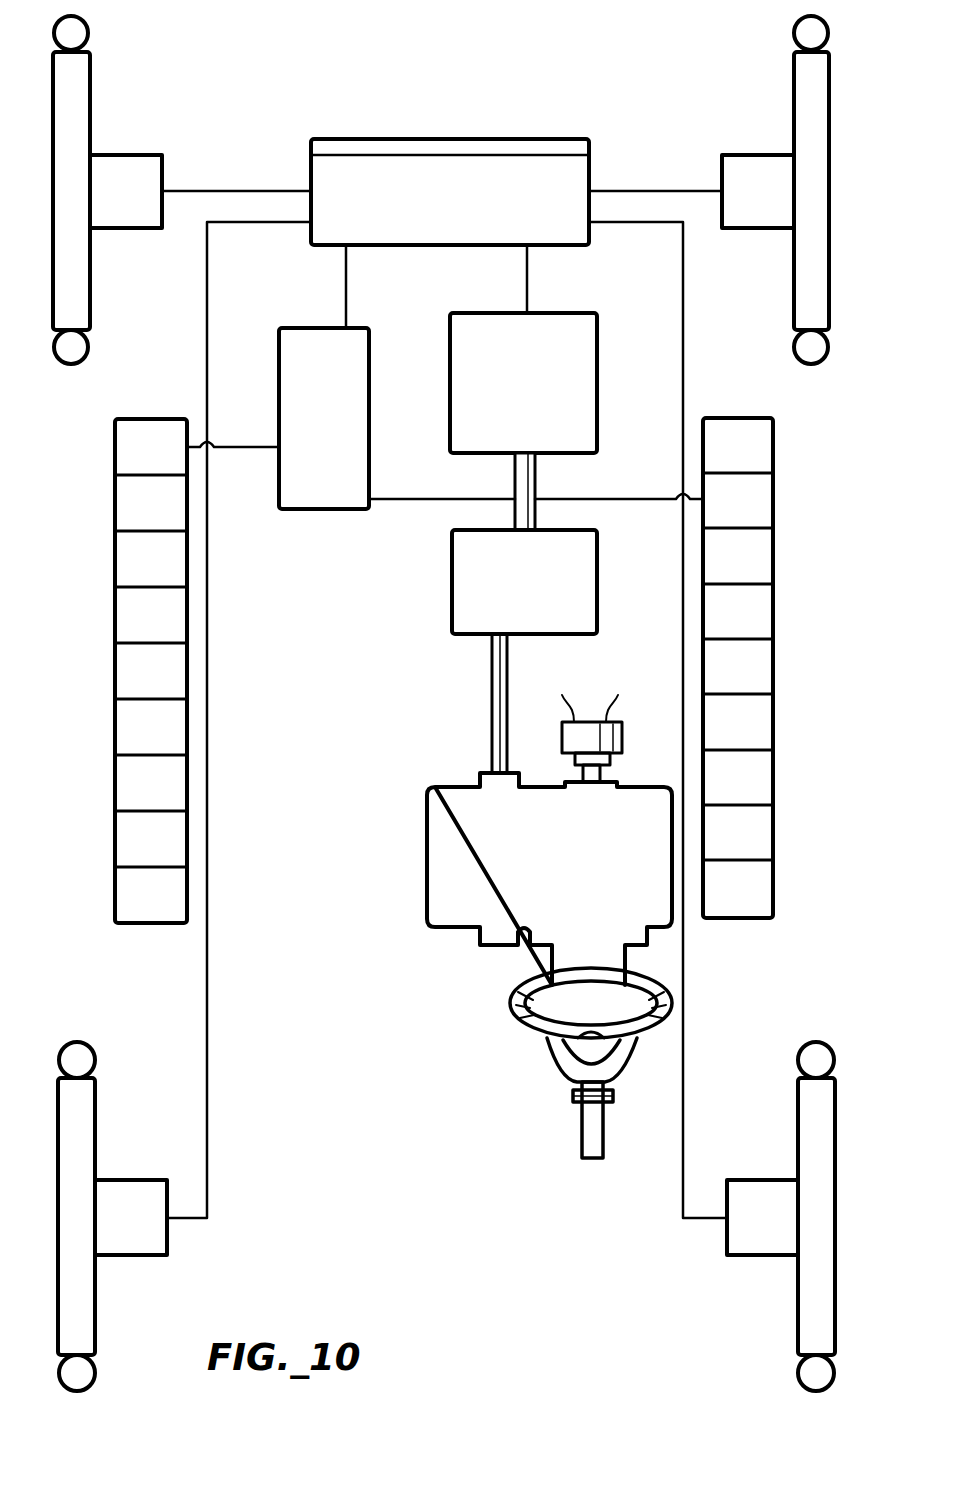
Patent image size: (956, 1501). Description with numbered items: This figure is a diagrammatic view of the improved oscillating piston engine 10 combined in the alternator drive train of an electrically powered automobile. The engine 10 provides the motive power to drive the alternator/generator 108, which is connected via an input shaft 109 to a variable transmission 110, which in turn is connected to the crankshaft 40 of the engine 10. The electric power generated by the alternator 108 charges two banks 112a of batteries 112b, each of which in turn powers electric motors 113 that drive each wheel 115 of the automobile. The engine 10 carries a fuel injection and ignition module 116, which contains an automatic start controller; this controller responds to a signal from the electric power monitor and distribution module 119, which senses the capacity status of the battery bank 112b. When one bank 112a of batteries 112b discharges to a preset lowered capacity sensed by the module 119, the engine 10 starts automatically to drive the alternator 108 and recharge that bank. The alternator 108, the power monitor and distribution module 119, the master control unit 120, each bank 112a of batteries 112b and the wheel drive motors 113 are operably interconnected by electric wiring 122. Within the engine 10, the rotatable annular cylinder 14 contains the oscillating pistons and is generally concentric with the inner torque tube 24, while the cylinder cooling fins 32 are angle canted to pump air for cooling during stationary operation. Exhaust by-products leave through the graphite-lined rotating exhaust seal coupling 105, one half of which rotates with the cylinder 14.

The oscillating piston engine 10 is at (427, 846).
The annular cylinder 14 is at (512, 1000).
The inner torque tube 24 is at (580, 776).
The cooling fins 32 is at (540, 1035).
The crankshaft 40 is at (492, 715).
The rotating exhaust seal coupling 105 is at (582, 1096).
The alternator/generator 108 is at (550, 325).
The input shaft 109 is at (532, 487).
The variable transmission 110 is at (452, 616).
The battery bank 112a is at (112, 713).
The batteries 112b is at (116, 846).
The electric motors 113 is at (120, 163).
The wheel 115 is at (90, 300).
The fuel injection and ignition module 116 is at (628, 736).
The electric power monitor and distribution module 119 is at (580, 177).
The master control unit 120 is at (350, 345).
The electric wiring 122 is at (195, 191).